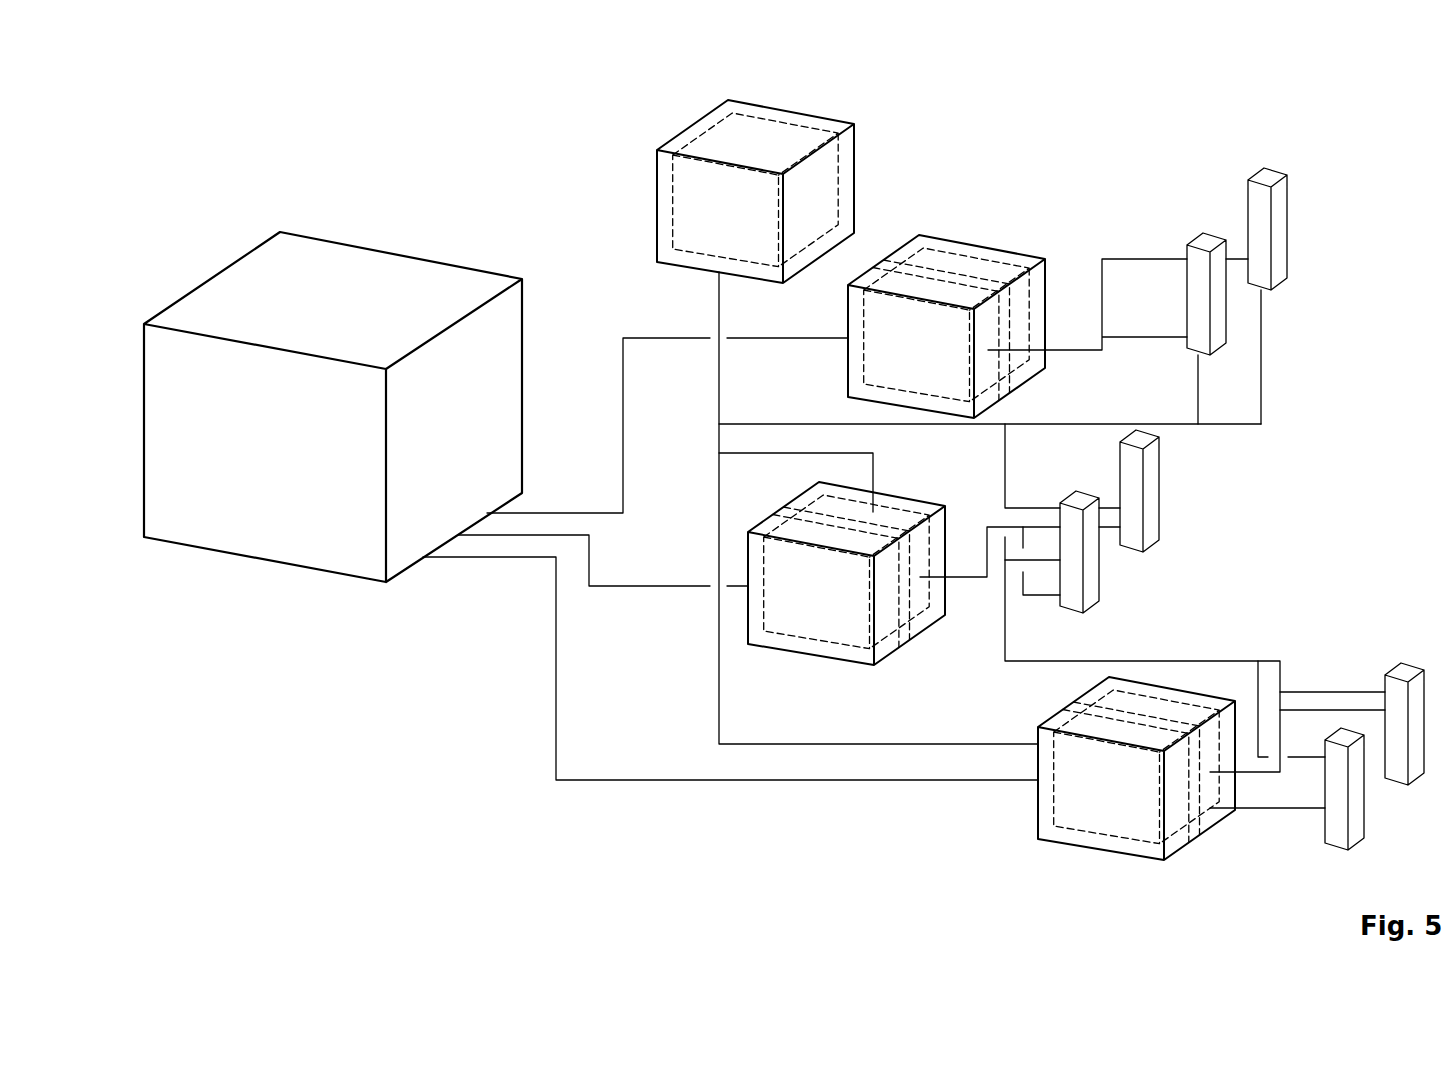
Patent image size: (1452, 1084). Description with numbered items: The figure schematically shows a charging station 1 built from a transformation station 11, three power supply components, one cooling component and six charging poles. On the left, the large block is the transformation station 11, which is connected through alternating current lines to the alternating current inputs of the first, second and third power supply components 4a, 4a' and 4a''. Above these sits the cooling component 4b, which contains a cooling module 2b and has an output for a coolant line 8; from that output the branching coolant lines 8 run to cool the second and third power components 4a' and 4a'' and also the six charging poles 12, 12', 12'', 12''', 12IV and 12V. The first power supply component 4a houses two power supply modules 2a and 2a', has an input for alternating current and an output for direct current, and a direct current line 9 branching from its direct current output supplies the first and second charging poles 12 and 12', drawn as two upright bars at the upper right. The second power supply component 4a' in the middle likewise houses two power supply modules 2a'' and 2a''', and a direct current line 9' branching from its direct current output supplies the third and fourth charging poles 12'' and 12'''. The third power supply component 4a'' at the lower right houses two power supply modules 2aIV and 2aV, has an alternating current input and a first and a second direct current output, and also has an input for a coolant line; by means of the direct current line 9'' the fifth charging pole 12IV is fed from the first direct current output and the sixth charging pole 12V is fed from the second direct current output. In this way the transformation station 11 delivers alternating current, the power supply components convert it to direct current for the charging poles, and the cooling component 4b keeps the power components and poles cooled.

The charging station 1 is at (526, 222).
The transformation station 11 is at (263, 560).
The cooling component 4b is at (653, 192).
The cooling module 2b is at (668, 227).
The coolant line 8 is at (718, 315).
The first power supply component 4a is at (913, 291).
The power supply module 2a is at (905, 325).
The power supply module 2a' is at (941, 294).
The direct current line 9 is at (1156, 571).
The first charging pole 12 is at (1206, 293).
The second charging pole 12' is at (1256, 262).
The second power supply component 4a' is at (846, 605).
The power supply module 2a'' is at (847, 611).
The power supply module 2a''' is at (854, 604).
The direct current line 9' is at (1020, 591).
The third charging pole 12'' is at (1094, 552).
The fourth charging pole 12''' is at (1183, 491).
The third power supply component 4a'' is at (1141, 761).
The power supply module 2aIV is at (1073, 835).
The power supply module 2aV is at (1213, 830).
The direct current line 9'' is at (1332, 670).
The fifth charging pole 12IV is at (1393, 667).
The sixth charging pole 12V is at (1340, 853).